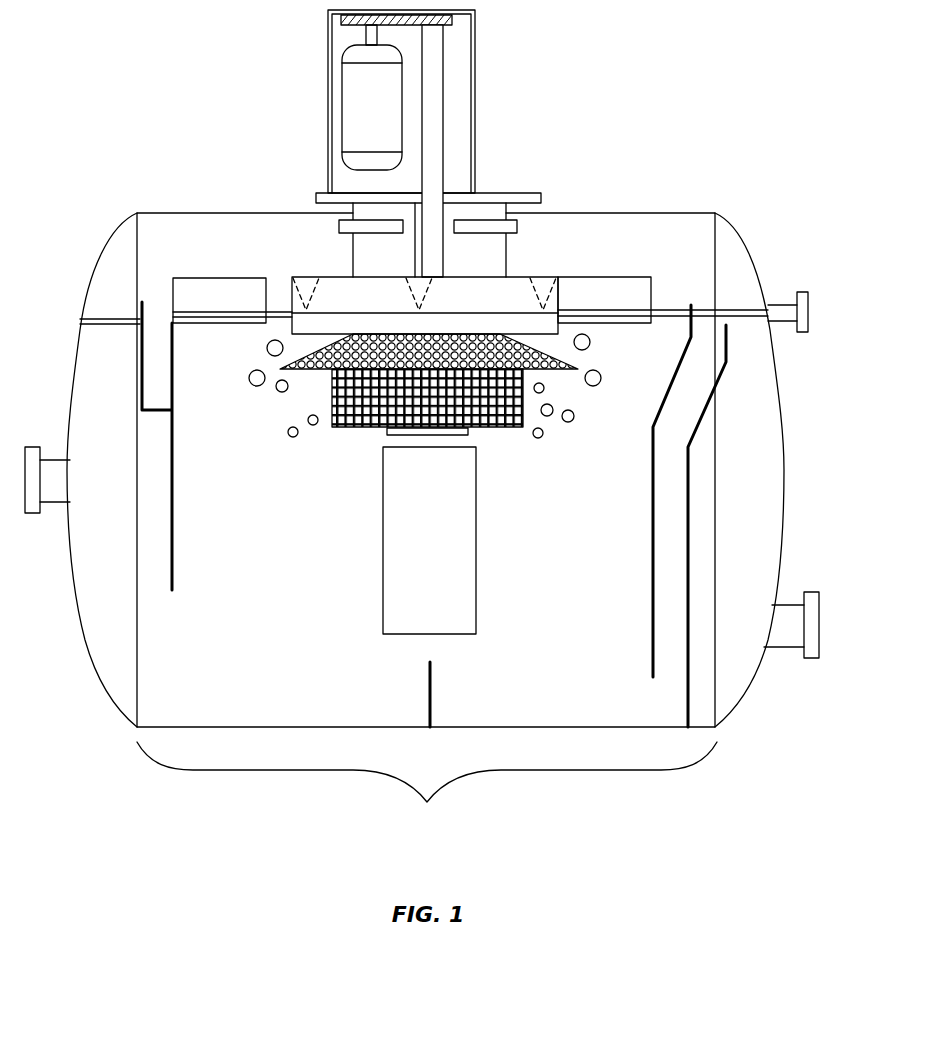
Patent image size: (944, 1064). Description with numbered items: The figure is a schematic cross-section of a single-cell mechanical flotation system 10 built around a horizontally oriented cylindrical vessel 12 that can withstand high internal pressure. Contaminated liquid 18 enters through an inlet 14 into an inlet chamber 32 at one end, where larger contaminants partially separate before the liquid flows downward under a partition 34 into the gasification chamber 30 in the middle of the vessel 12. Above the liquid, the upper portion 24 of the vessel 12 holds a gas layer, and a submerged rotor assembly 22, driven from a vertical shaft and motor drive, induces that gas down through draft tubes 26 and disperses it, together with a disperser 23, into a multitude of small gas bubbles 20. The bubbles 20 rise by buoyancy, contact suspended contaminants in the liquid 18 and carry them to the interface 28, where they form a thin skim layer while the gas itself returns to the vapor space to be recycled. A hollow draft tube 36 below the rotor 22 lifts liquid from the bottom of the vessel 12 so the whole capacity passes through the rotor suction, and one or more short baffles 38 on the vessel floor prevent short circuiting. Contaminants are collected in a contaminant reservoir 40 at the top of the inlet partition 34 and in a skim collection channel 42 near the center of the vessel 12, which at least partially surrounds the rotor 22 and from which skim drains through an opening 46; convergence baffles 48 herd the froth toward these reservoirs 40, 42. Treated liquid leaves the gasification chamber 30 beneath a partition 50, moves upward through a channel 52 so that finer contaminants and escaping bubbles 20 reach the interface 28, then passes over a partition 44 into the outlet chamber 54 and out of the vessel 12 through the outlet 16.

The single-cell mechanical flotation system 10 is at (143, 70).
The cylindrical vessel 12 is at (605, 212).
The inlet 14 is at (62, 505).
The outlet 16 is at (788, 602).
The contaminated liquid 18 is at (285, 543).
The gas bubbles 20 is at (291, 437).
The rotor assembly 22 is at (468, 430).
The disperser 23 is at (352, 430).
The upper portion 24 is at (597, 237).
The draft tubes 26 is at (487, 220).
The interface 28 is at (662, 312).
The gasification chamber 30 is at (427, 786).
The inlet chamber 32 is at (102, 470).
The partition 34 is at (175, 512).
The hollow draft tube 36 is at (476, 535).
The short baffles 38 is at (430, 693).
The contaminant reservoir 40 is at (155, 308).
The skim collection channel 42 is at (425, 305).
The partition 44 is at (690, 715).
The opening 46 is at (778, 302).
The convergence baffles 48 is at (233, 325).
The partition 50 is at (653, 640).
The channel 52 is at (670, 510).
The outlet chamber 54 is at (745, 472).